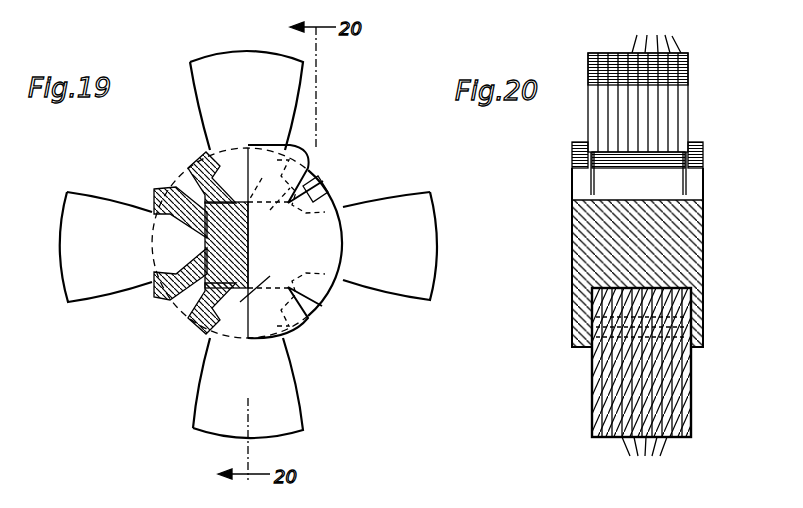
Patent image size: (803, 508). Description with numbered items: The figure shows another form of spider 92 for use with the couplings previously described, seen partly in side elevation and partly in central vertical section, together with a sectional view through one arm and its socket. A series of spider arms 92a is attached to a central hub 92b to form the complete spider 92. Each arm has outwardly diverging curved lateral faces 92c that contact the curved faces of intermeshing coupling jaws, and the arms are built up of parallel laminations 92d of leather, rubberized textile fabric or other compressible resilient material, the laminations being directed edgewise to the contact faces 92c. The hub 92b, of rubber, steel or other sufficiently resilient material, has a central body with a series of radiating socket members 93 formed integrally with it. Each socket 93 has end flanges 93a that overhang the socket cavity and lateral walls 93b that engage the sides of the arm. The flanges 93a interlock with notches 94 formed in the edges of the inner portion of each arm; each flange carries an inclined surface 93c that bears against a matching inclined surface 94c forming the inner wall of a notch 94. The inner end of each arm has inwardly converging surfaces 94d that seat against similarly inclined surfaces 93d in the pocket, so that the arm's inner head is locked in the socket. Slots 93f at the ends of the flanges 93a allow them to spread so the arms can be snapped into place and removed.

In FIG. 19, the spider 92 is at (323, 155).
In FIG. 19, the spider arms 92a is at (232, 70).
In FIG. 20, the spider arms 92a is at (690, 56).
In FIG. 19, the central hub 92b is at (248, 243).
In FIG. 20, the central hub 92b is at (700, 242).
In FIG. 19, the curved lateral faces 92c is at (70, 192).
In FIG. 20, the curved lateral faces 92c is at (680, 95).
In FIG. 20, the laminations 92d is at (651, 244).
In FIG. 19, the socket members 93 is at (152, 228).
In FIG. 19, the end flanges 93a is at (192, 172).
In FIG. 20, the end flanges 93a is at (628, 184).
In FIG. 19, the lateral walls 93b is at (342, 262).
In FIG. 20, the lateral walls 93b is at (572, 155).
In FIG. 19, the inclined surface 93c is at (330, 198).
In FIG. 19, the inclined surfaces 93d is at (322, 184).
In FIG. 19, the slots 93f is at (263, 282).
In FIG. 20, the slots 93f is at (590, 180).
In FIG. 19, the notches 94 is at (168, 300).
In FIG. 19, the inclined surfaces 94c is at (333, 222).
In FIG. 19, the inwardly converging surfaces 94d is at (340, 248).